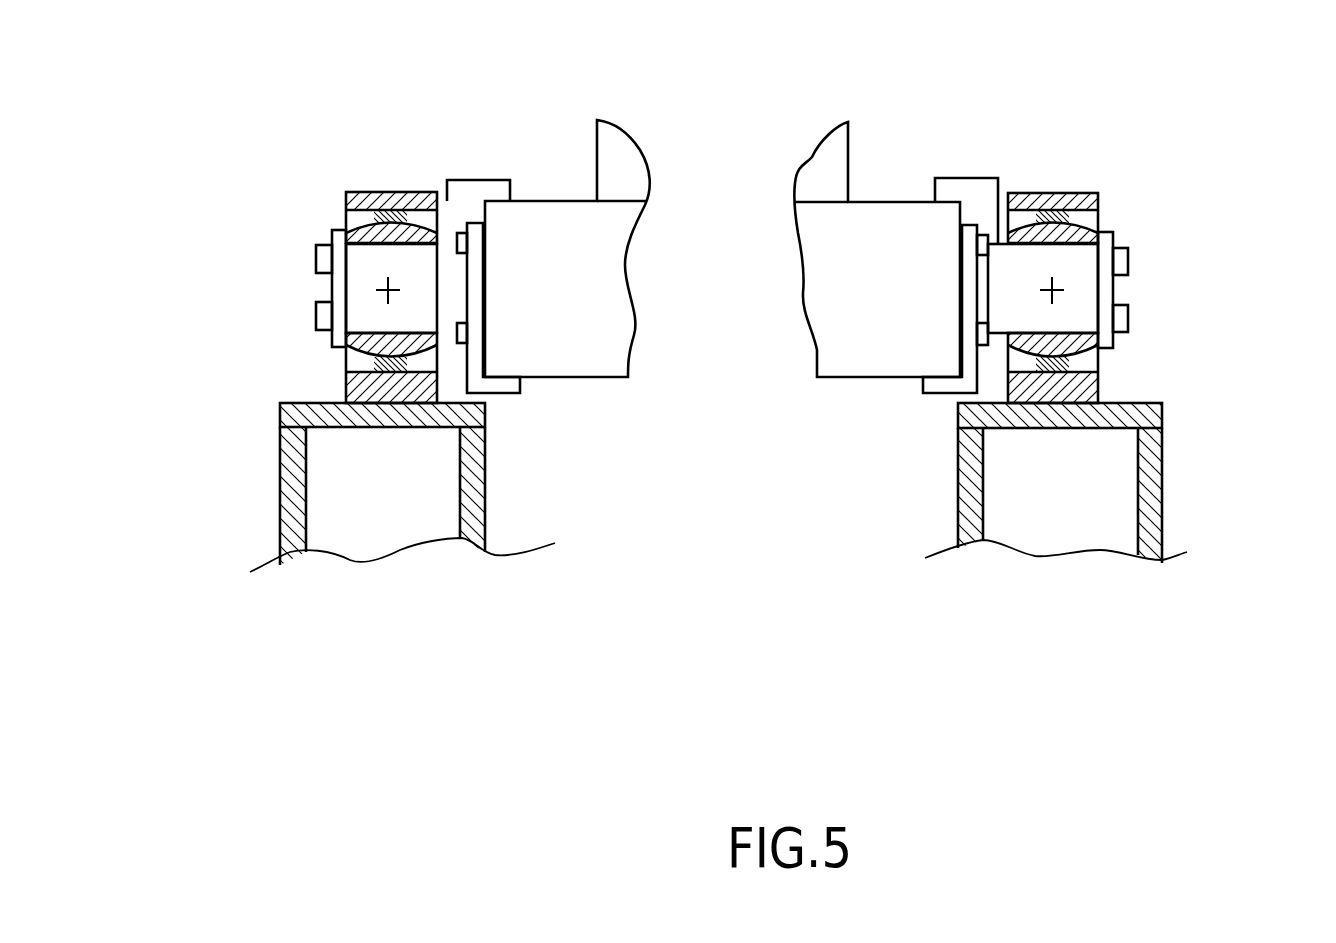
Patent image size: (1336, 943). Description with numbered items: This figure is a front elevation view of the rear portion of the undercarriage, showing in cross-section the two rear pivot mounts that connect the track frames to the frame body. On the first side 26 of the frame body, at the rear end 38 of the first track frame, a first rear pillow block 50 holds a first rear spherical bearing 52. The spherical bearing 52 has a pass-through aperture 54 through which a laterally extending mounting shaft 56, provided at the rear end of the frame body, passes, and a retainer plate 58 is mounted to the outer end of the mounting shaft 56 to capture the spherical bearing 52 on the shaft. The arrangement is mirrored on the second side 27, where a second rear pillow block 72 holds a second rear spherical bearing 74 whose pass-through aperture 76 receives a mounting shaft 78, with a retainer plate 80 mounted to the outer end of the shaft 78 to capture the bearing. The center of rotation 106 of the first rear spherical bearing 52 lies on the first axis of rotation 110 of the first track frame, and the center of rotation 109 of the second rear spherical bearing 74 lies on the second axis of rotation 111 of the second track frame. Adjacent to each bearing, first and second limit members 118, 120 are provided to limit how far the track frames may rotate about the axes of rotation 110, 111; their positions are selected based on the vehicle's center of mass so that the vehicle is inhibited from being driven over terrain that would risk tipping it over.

The first side 26 is at (597, 162).
The second side 27 is at (848, 162).
The rear end 38 is at (298, 403).
The first rear pillow block 50 is at (364, 192).
The first rear spherical bearing 52 is at (330, 362).
The pass-through aperture 54 is at (400, 245).
The mounting shaft 56 is at (432, 308).
The retainer plate 58 is at (332, 232).
The second rear pillow block 72 is at (1078, 193).
The second rear spherical bearing 74 is at (1100, 222).
The pass-through aperture 76 is at (1100, 283).
The mounting shaft 78 is at (1005, 265).
The retainer plate 80 is at (1115, 342).
The center of rotation 106 is at (388, 292).
The center of rotation 109 is at (1052, 292).
The first axis of rotation 110 is at (388, 292).
The second axis of rotation 111 is at (1052, 292).
The first limit member 118 is at (508, 393).
The second limit member 120 is at (462, 180).